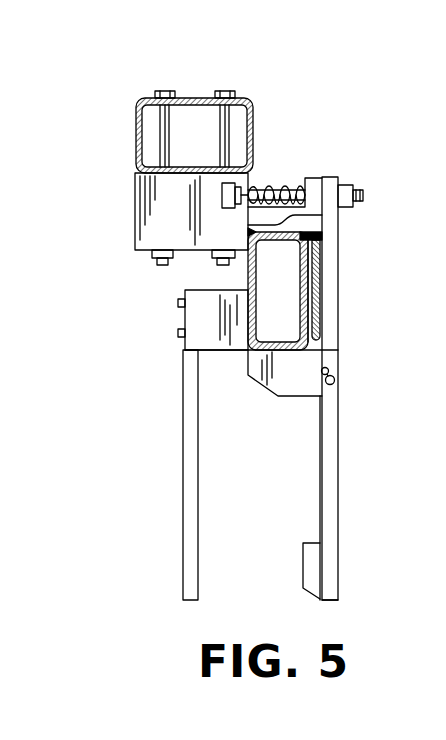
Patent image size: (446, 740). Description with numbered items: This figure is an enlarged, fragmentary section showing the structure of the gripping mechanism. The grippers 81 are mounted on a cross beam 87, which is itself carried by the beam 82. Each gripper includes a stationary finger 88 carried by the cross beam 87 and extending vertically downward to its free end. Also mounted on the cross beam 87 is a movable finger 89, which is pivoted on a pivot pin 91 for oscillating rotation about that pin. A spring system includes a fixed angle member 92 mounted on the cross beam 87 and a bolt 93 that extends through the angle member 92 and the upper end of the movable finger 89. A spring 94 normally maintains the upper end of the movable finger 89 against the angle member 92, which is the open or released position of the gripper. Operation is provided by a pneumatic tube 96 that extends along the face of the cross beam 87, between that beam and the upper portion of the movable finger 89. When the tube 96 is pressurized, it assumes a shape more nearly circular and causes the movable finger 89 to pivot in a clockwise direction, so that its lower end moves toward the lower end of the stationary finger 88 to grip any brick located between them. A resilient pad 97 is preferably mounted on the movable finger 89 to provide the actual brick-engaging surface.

The gripper 81 is at (170, 537).
The beam 82 is at (254, 122).
The cross beam 87 is at (252, 332).
The stationary finger 88 is at (194, 503).
The movable finger 89 is at (335, 470).
The pivot pin 91 is at (337, 373).
The fixed angle member 92 is at (318, 178).
The bolt 93 is at (358, 188).
The spring 94 is at (265, 187).
The pneumatic tube 96 is at (313, 283).
The resilient pad 97 is at (310, 558).